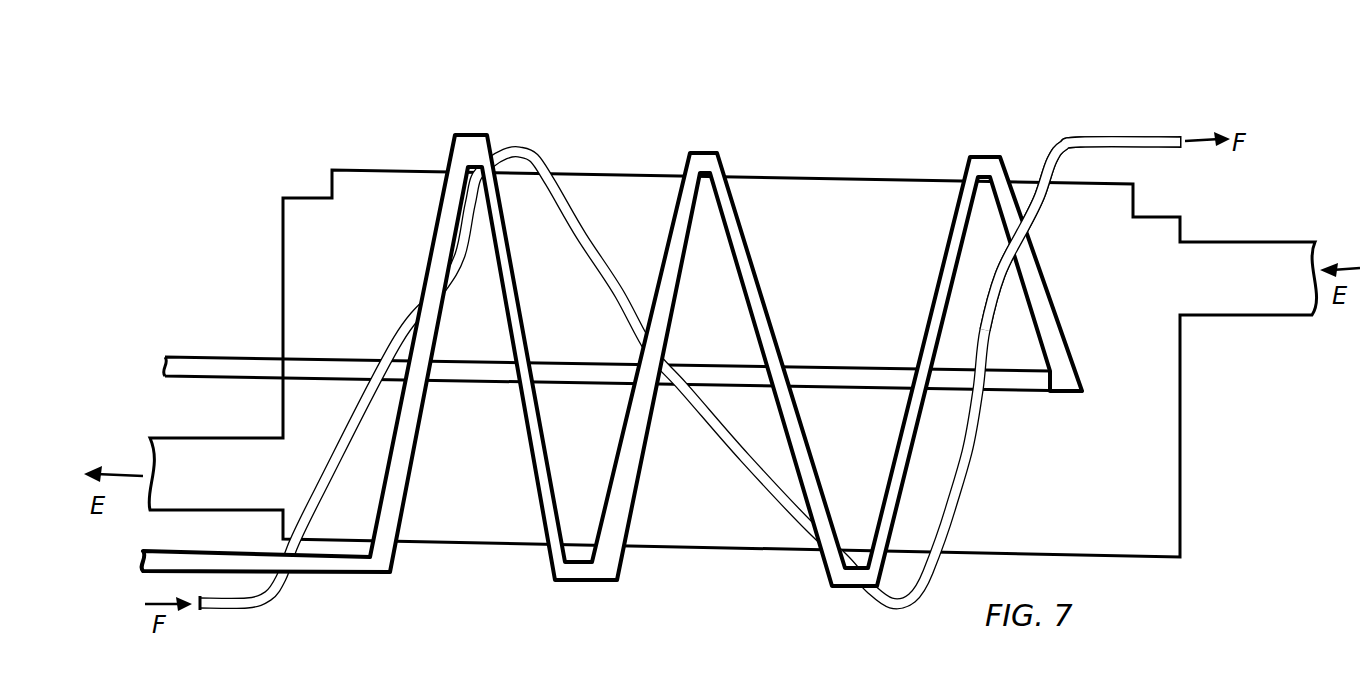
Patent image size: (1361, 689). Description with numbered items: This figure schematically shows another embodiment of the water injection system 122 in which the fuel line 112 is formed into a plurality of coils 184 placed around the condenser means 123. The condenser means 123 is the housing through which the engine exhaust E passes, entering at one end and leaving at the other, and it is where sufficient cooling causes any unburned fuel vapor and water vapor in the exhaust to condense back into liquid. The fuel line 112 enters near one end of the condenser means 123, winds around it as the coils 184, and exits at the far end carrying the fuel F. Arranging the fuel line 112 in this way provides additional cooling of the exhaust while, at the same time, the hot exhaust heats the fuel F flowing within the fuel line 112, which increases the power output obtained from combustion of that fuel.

The system 122 is at (729, 323).
The condenser means 123 is at (752, 179).
The coils 184 is at (1045, 217).
The fuel line 112 is at (690, 373).